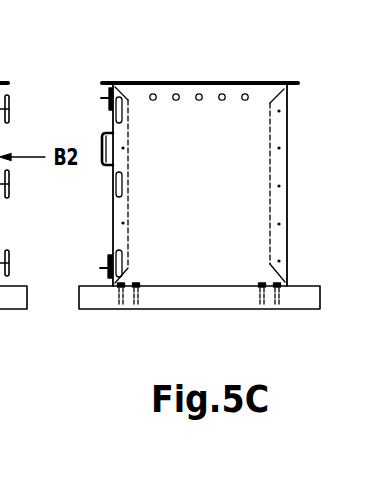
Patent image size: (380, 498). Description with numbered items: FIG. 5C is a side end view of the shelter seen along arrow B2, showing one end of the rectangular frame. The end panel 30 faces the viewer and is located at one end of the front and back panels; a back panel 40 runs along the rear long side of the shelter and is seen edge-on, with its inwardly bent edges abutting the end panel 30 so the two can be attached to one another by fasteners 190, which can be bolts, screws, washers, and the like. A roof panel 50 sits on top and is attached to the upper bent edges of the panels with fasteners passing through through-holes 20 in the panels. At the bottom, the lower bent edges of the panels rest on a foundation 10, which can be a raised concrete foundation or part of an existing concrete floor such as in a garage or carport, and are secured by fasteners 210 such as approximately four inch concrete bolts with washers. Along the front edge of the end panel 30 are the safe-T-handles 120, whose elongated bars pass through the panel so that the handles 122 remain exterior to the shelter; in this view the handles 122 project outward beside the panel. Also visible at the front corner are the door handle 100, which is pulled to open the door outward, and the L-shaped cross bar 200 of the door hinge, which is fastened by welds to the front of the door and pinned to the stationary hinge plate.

The foundation 10 is at (160, 323).
The holes 20 is at (183, 56).
The end panel 30 is at (243, 176).
The back panel 40 is at (314, 185).
The roof panel 50 is at (149, 62).
The door handle 100 is at (77, 140).
The safe-T-handle 120 is at (113, 185).
The handle 122 is at (61, 94).
The fastener 190 is at (244, 185).
The L-shaped cross bar 200 is at (75, 257).
The fastener 210 is at (167, 318).